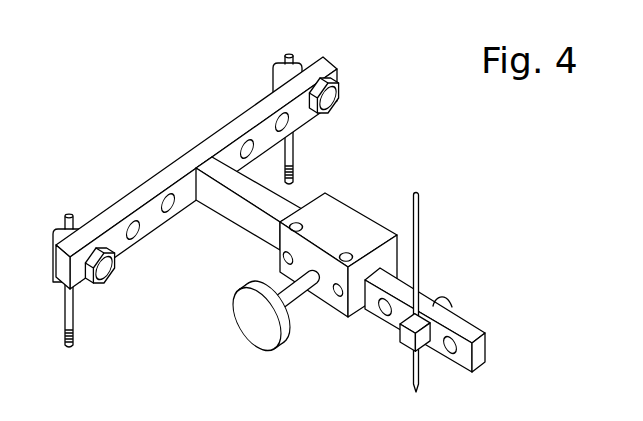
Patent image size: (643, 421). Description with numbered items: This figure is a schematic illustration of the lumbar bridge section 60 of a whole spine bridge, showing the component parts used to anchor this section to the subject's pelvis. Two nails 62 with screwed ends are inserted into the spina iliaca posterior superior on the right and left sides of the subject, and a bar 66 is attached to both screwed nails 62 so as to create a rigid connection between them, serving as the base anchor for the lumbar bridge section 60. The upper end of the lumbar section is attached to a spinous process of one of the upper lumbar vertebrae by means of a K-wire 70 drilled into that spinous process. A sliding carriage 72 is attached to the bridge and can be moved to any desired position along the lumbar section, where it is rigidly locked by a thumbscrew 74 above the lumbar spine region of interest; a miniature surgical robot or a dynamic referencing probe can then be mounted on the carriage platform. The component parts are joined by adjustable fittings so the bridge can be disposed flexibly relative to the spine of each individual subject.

The lumbar bridge section 60 is at (466, 316).
The nail 62 is at (281, 56).
The bar 66 is at (137, 190).
The K-wire 70 is at (412, 371).
The sliding carriage 72 is at (355, 207).
The thumbscrew 74 is at (234, 316).